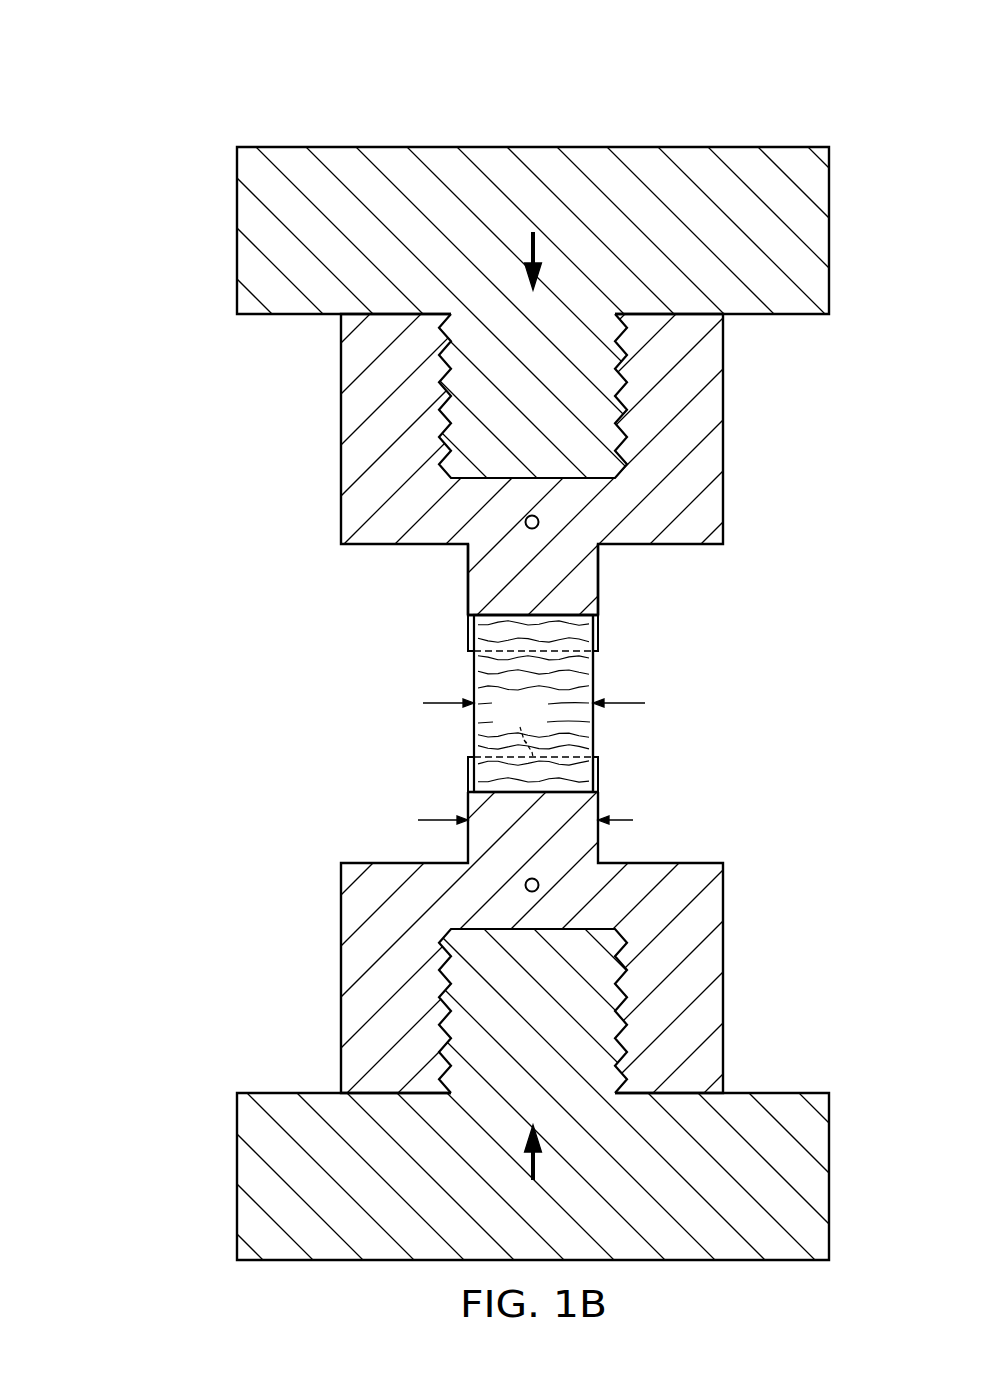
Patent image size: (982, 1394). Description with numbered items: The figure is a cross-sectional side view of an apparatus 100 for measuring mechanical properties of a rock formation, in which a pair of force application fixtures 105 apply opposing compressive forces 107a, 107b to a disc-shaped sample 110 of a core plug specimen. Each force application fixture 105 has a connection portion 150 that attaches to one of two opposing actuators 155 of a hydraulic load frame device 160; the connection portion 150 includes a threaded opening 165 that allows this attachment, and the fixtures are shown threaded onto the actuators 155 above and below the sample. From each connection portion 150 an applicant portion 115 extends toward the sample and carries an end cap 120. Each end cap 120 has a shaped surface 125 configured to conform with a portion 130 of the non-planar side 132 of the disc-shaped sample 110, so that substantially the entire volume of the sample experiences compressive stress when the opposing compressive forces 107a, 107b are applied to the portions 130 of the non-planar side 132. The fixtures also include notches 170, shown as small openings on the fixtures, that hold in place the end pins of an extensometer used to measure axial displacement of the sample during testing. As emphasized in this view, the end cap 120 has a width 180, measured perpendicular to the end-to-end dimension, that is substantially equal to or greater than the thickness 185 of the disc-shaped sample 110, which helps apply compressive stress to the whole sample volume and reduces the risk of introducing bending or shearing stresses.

The apparatus 100 is at (112, 354).
The force application fixture 105 is at (205, 400).
The compressive force 107a is at (533, 250).
The compressive force 107b is at (533, 1165).
The disc-shaped sample 110 is at (604, 739).
The applicant portion 115 is at (478, 591).
The end cap 120 is at (459, 649).
The shaped surface 125 is at (521, 725).
The portion of non-planar side 130 is at (566, 613).
The non-planar side 132 is at (594, 677).
The connection portion 150 is at (346, 418).
The actuator 155 is at (246, 205).
The load frame device 160 is at (232, 55).
The threaded opening 165 is at (627, 388).
The notch 170 is at (526, 525).
The width 180 is at (633, 820).
The thickness 185 is at (443, 704).